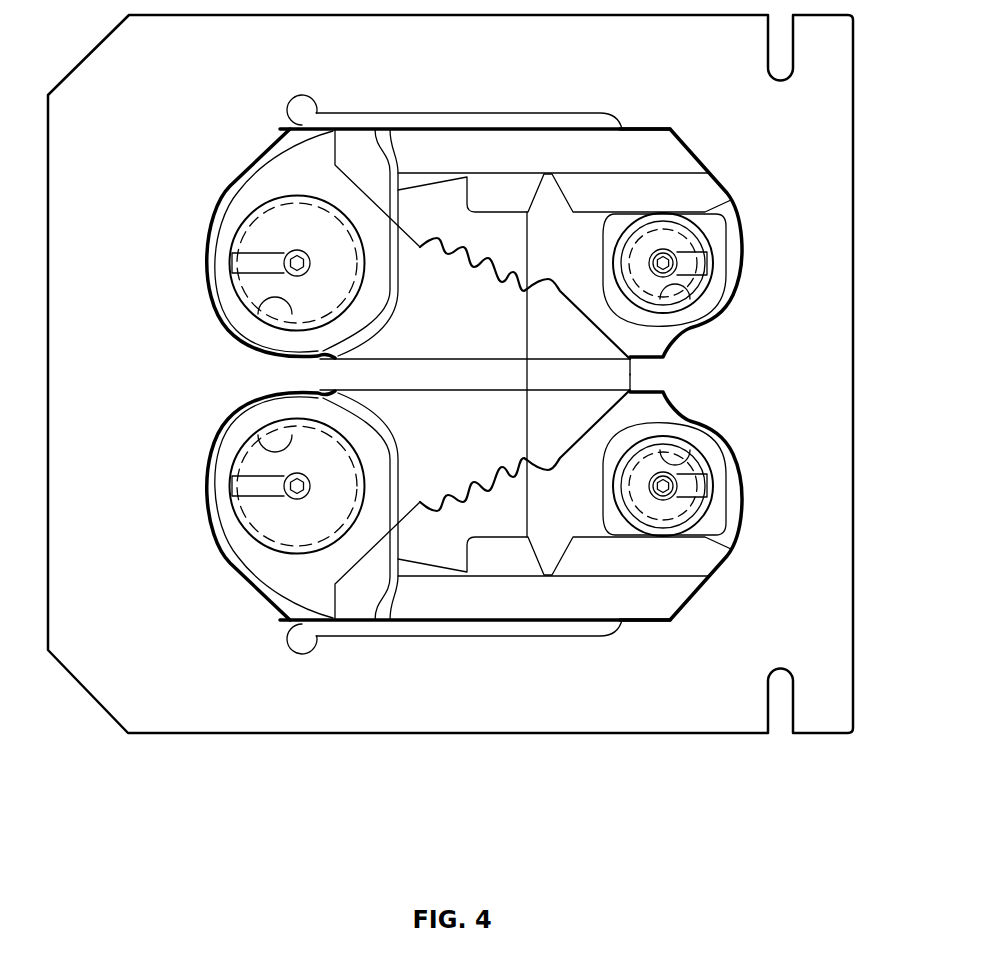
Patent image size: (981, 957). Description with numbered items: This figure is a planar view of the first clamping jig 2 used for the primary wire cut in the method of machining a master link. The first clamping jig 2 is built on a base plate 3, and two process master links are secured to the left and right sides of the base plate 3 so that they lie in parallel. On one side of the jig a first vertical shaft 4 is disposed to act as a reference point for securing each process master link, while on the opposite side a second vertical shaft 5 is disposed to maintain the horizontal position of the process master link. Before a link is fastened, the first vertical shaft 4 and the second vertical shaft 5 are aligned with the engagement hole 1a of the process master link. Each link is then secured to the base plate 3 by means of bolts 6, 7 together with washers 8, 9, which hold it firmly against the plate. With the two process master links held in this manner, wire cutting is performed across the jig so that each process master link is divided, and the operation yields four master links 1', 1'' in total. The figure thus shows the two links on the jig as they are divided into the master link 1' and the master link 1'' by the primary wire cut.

The master link 1' is at (236, 374).
The master link 1'' is at (717, 323).
The engagement hole 1a is at (259, 313).
The first clamping jig 2 is at (450, 438).
The base plate 3 is at (163, 720).
The first vertical shaft 4 is at (680, 243).
The second vertical shaft 5 is at (293, 220).
The bolt 6 is at (664, 251).
The bolt 7 is at (289, 250).
The washer 8 is at (698, 282).
The washer 9 is at (263, 238).